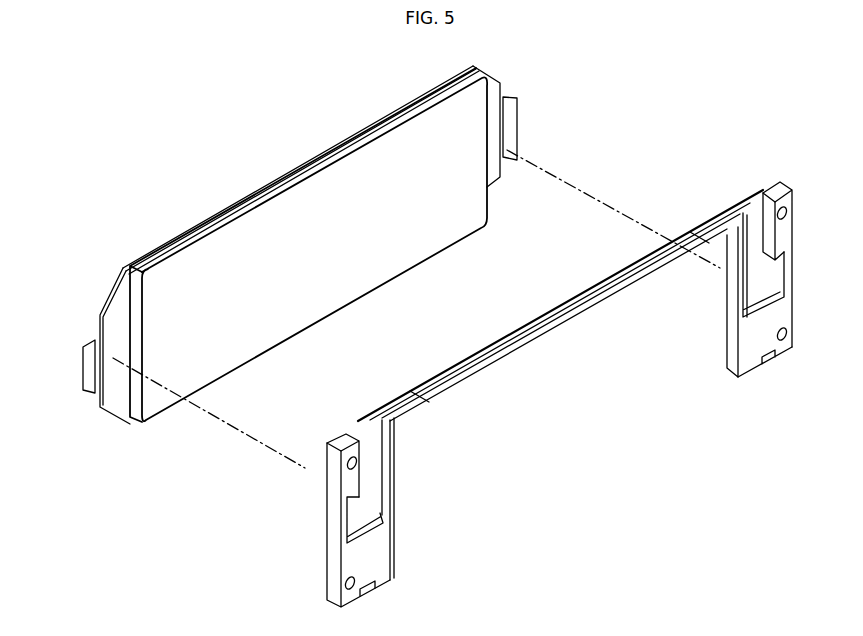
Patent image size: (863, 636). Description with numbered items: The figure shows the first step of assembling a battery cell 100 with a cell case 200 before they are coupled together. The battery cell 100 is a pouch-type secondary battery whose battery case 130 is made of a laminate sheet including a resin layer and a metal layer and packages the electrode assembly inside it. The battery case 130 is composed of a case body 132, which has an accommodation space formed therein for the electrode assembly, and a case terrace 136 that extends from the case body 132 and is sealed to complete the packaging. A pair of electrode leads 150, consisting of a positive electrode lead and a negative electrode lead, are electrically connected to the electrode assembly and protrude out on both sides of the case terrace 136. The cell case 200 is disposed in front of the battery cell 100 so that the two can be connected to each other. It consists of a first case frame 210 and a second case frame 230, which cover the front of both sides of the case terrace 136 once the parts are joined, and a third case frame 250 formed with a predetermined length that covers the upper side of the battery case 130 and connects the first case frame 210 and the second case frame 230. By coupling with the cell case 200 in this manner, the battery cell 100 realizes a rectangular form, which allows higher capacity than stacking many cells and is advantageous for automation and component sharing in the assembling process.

The battery cell 100 is at (299, 248).
The battery case 130 is at (308, 245).
The case body 132 is at (245, 345).
The case terrace 136 is at (492, 182).
The electrode lead 150 is at (513, 122).
The cell case 200 is at (580, 379).
The first case frame 210 is at (370, 563).
The second case frame 230 is at (757, 340).
The third case frame 250 is at (547, 322).